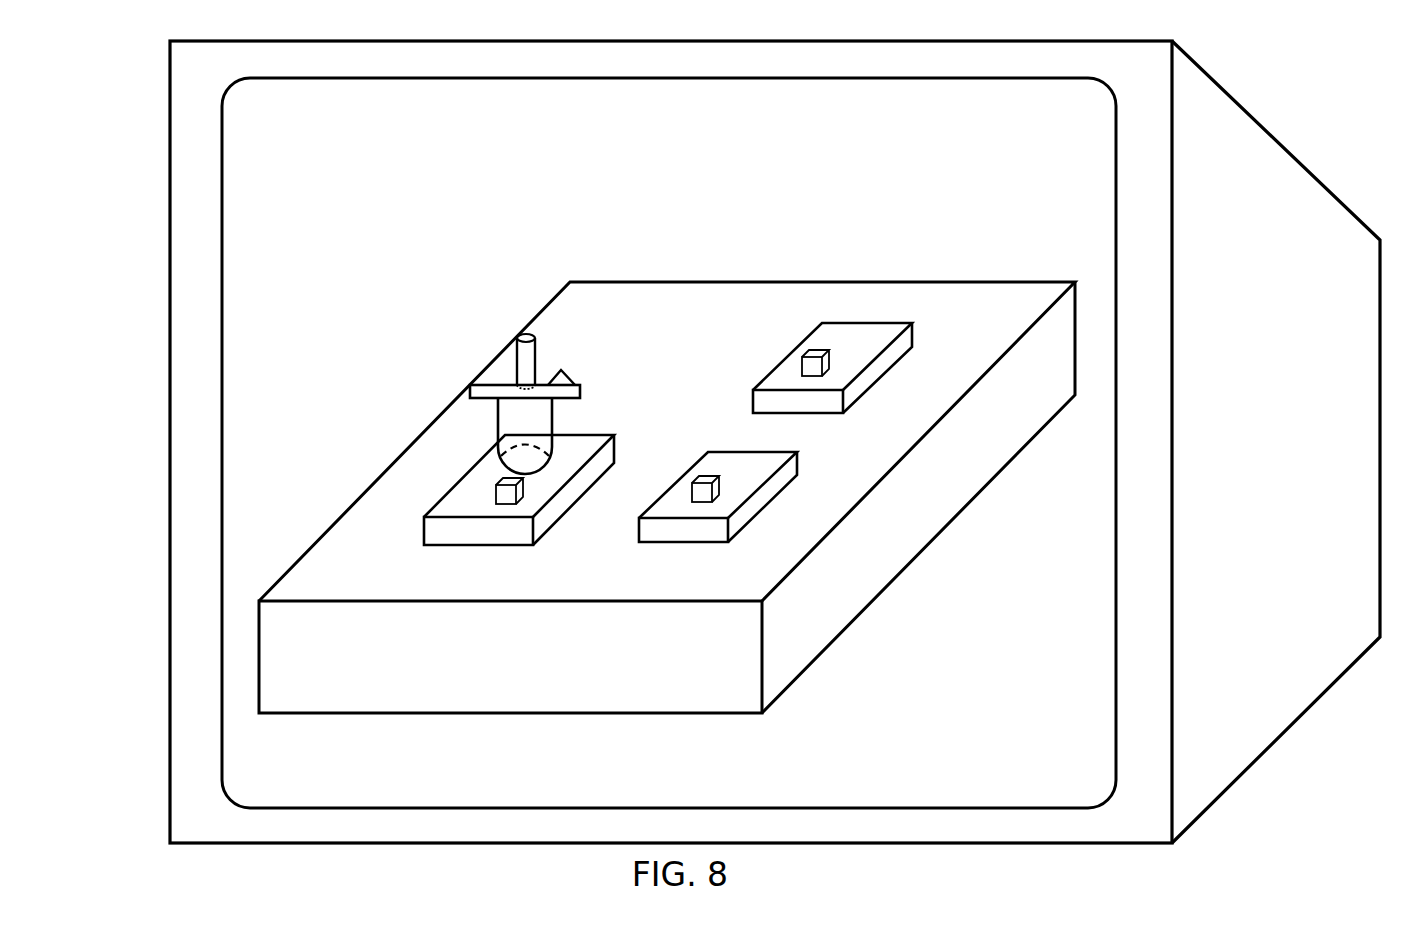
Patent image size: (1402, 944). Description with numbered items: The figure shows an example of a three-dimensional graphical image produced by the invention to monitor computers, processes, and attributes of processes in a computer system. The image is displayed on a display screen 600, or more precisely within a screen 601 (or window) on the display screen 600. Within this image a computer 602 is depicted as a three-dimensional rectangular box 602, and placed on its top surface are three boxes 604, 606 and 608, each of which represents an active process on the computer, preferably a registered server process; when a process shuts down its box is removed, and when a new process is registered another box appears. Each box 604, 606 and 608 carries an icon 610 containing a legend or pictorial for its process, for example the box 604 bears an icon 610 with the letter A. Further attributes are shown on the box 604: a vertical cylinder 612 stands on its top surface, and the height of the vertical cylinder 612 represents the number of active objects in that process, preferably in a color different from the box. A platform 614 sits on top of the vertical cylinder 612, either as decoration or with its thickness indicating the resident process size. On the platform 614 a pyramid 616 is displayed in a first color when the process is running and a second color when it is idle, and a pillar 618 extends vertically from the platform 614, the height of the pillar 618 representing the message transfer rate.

The display screen 600 is at (1222, 137).
The screen 601 is at (265, 154).
The computer 602 is at (602, 695).
The box 604 is at (520, 530).
The box 606 is at (717, 528).
The box 608 is at (828, 398).
The icon 610 is at (494, 493).
The vertical cylinder 612 is at (518, 423).
The platform 614 is at (583, 392).
The pyramid 616 is at (563, 375).
The pillar 618 is at (525, 352).